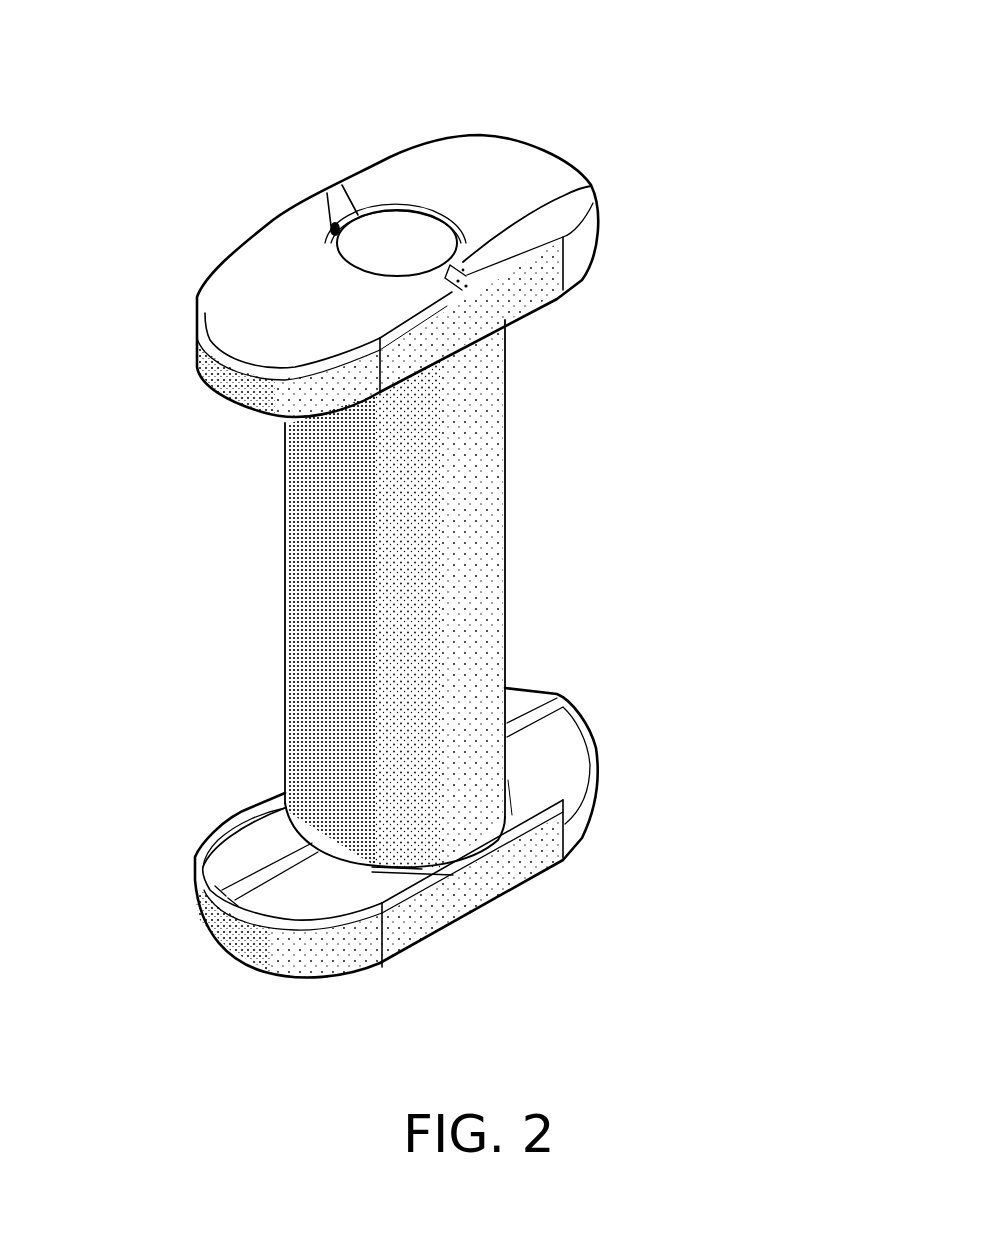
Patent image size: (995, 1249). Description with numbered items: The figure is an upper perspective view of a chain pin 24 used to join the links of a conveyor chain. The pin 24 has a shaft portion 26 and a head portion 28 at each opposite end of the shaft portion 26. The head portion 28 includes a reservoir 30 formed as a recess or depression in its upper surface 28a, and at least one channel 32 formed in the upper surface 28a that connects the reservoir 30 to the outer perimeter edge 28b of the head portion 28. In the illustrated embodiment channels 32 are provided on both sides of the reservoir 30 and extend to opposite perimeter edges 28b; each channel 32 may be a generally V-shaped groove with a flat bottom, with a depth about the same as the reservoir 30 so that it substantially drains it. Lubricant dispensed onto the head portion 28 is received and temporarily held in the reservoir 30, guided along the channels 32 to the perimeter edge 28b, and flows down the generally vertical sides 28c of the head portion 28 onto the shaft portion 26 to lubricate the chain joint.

The chain pin 24 is at (458, 522).
The shaft portion 26 is at (485, 542).
The head portion 28 is at (422, 522).
The upper surface 28a is at (519, 180).
The outer perimeter edge 28b is at (500, 258).
The sides of the head portion 28c is at (473, 317).
The reservoir 30 is at (405, 232).
The channel 32 is at (327, 193).